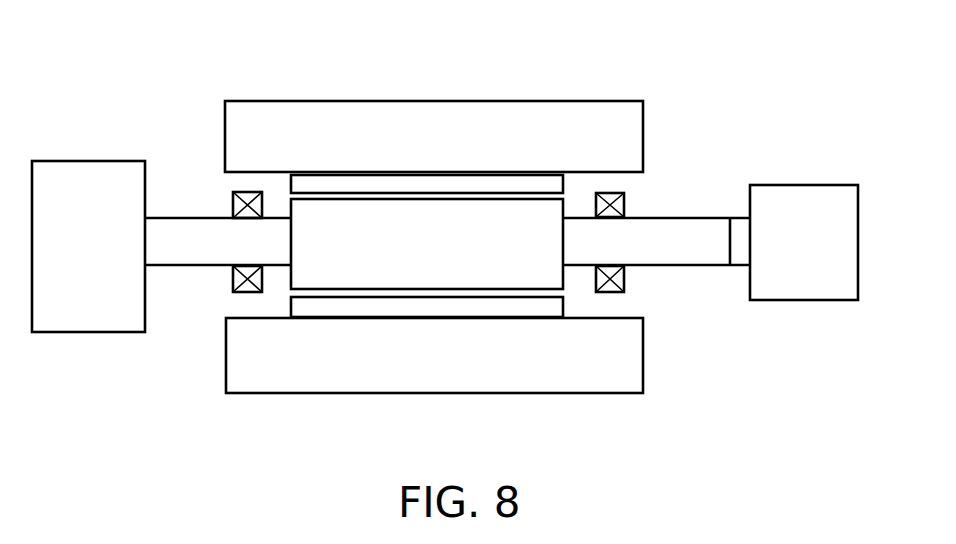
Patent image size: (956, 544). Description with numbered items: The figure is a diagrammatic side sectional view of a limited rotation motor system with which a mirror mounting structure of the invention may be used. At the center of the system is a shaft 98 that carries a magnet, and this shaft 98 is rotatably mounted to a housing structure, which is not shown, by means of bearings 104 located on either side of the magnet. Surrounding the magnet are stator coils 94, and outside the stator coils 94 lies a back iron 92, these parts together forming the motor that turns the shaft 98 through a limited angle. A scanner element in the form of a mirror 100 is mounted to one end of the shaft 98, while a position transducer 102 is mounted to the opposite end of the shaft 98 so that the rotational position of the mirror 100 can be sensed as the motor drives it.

The back iron 92 is at (515, 100).
The stator coils 94 is at (290, 308).
The shaft 98 is at (718, 266).
The mirror 100 is at (806, 184).
The position transducer 102 is at (88, 161).
The bearings 104 is at (232, 207).